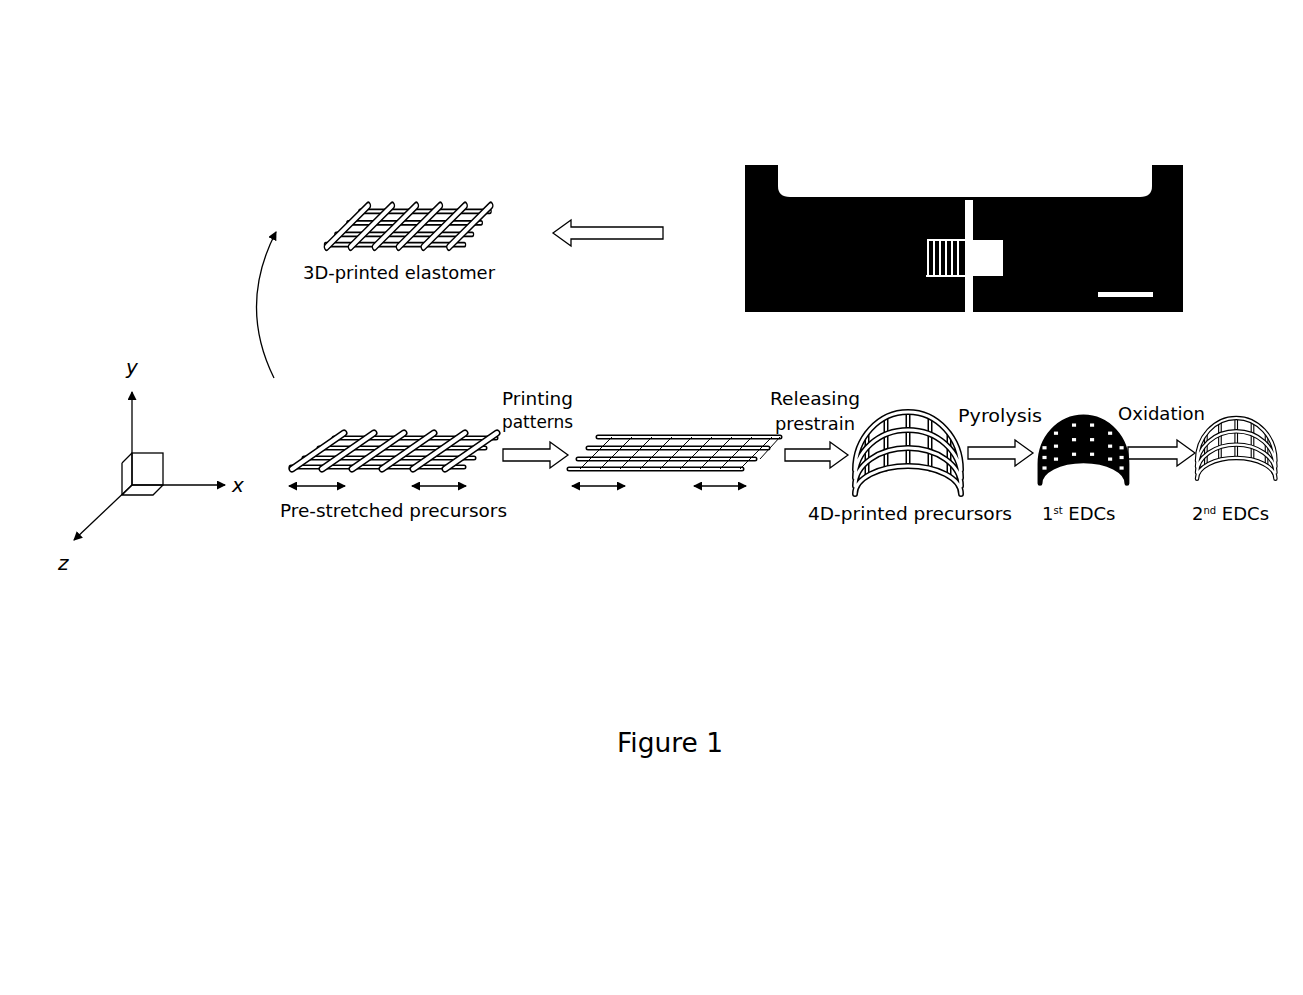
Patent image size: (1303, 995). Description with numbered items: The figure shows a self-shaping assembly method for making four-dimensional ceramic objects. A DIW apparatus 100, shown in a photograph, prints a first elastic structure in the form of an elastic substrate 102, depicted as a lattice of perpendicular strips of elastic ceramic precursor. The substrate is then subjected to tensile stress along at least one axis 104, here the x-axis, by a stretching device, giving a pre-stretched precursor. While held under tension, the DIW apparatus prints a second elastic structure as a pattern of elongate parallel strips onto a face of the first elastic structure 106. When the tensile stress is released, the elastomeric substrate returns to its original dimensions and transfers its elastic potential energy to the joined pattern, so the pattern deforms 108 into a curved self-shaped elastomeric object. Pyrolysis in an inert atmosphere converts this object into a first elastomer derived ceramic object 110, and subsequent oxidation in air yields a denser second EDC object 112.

The DIW apparatus 100 is at (1010, 165).
The elastic substrate 102 is at (408, 193).
The axis 104 is at (383, 427).
The first elastic structure 106 is at (665, 487).
The pattern deforms 108 is at (895, 535).
The first elastomer derived ceramic (EDC) object 110 is at (1068, 542).
The second EDC object 112 is at (1243, 542).